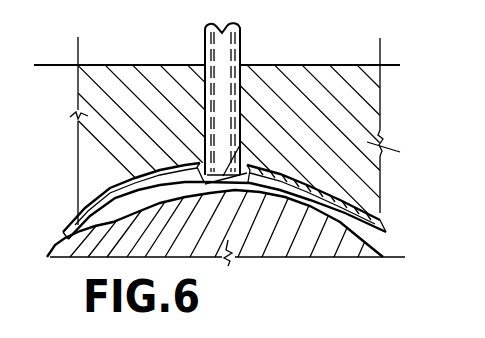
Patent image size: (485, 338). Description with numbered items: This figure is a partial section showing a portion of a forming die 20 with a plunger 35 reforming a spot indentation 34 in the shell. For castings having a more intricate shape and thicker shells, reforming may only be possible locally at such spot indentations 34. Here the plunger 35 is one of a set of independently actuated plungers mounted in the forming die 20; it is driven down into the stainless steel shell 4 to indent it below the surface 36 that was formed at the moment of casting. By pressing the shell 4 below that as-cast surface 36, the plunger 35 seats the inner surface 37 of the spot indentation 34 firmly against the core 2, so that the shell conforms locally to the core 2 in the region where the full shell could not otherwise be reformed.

The core 2 is at (48, 256).
The stainless steel shell 4 is at (364, 227).
The forming die 20 is at (324, 70).
The spot indentation 34 is at (240, 145).
The plunger 35 is at (242, 53).
The surface 36 is at (354, 201).
The inner surface 37 is at (250, 185).